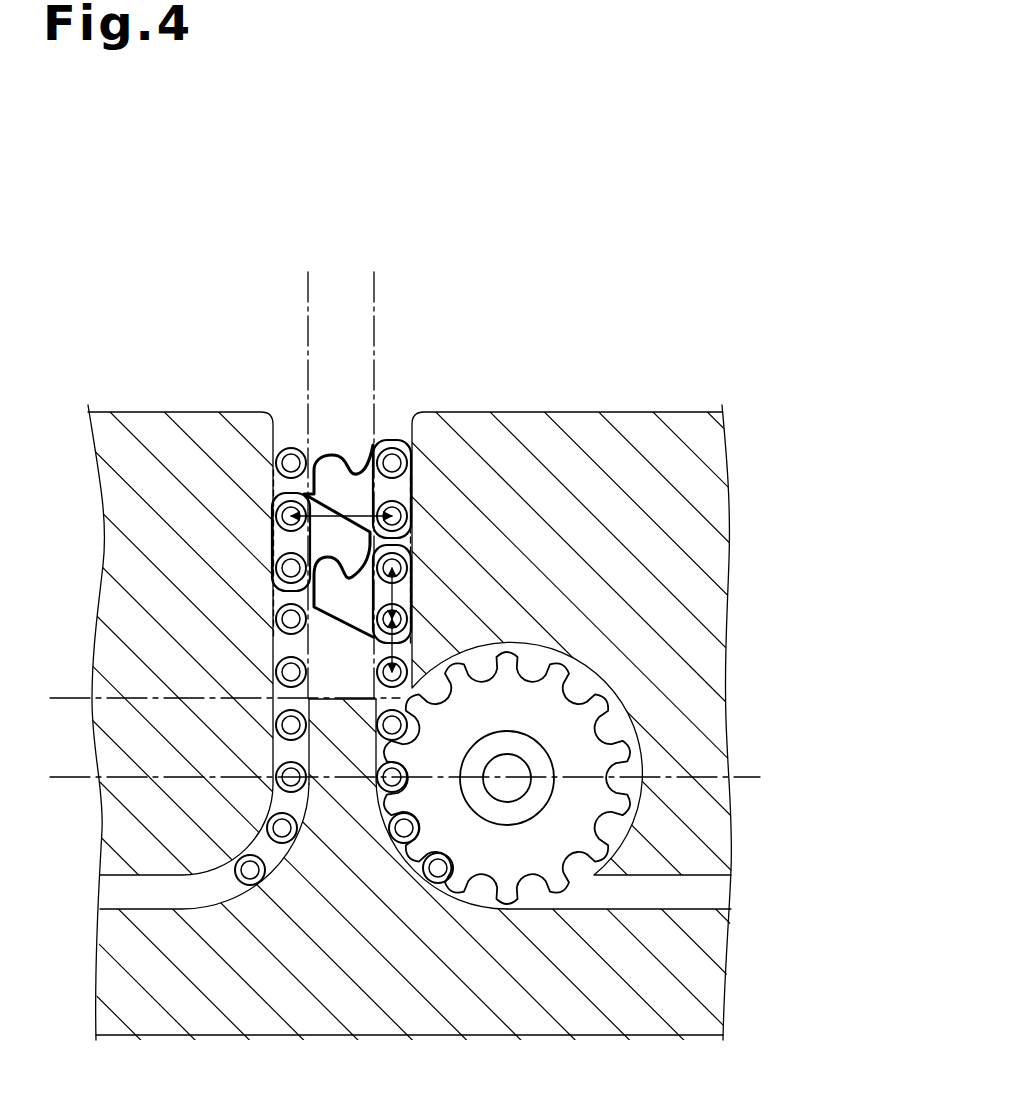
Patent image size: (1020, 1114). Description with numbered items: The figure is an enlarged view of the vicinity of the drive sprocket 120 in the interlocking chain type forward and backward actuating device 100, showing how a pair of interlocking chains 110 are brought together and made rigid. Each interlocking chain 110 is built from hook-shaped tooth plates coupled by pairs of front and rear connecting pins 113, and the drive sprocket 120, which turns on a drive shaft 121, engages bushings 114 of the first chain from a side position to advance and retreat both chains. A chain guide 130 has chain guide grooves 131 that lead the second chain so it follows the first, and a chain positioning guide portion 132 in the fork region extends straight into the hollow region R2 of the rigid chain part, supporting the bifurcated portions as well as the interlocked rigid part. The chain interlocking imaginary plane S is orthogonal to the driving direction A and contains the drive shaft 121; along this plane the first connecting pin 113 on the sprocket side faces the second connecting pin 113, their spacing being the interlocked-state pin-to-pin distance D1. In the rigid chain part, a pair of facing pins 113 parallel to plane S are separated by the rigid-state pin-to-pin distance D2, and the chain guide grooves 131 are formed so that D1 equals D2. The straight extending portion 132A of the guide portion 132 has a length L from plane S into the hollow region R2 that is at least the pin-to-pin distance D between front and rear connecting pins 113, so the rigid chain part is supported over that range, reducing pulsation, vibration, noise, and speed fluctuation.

The interlocking chain type forward and backward actuating device 100 is at (662, 350).
The interlocking chain 110 is at (293, 446).
The connecting pin 113 is at (272, 489).
The bushing 114 is at (286, 446).
The drive sprocket 120 is at (603, 703).
The drive shaft 121 is at (515, 768).
The chain guide 130 is at (704, 652).
The chain guide groove 131 is at (153, 898).
The chain positioning guide portion 132 is at (354, 833).
The straight extending portion 132A is at (342, 735).
The pin-to-pin distance D is at (404, 590).
The interlocked-state pin-to-pin distance D1 is at (384, 850).
The rigid-state pin-to-pin distance D2 is at (360, 472).
The hollow region R2 is at (308, 282).
The length of the straight extending portion L is at (62, 698).
The chain interlocking imaginary plane S is at (414, 778).
The driving direction A is at (360, 365).